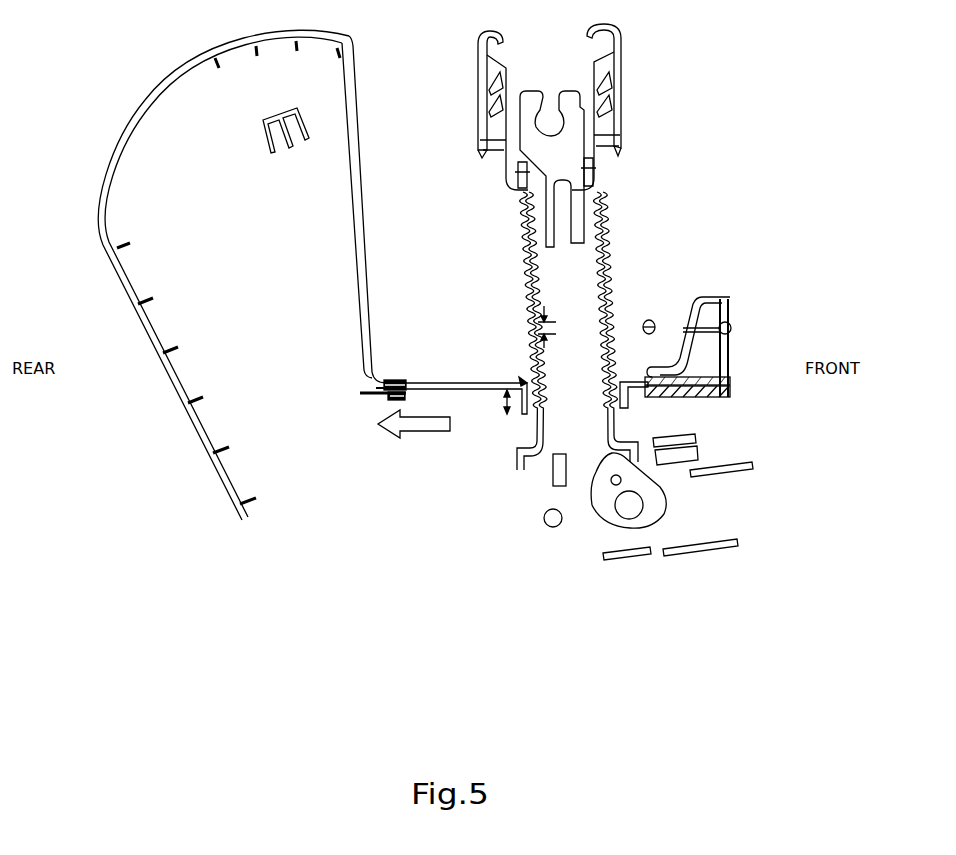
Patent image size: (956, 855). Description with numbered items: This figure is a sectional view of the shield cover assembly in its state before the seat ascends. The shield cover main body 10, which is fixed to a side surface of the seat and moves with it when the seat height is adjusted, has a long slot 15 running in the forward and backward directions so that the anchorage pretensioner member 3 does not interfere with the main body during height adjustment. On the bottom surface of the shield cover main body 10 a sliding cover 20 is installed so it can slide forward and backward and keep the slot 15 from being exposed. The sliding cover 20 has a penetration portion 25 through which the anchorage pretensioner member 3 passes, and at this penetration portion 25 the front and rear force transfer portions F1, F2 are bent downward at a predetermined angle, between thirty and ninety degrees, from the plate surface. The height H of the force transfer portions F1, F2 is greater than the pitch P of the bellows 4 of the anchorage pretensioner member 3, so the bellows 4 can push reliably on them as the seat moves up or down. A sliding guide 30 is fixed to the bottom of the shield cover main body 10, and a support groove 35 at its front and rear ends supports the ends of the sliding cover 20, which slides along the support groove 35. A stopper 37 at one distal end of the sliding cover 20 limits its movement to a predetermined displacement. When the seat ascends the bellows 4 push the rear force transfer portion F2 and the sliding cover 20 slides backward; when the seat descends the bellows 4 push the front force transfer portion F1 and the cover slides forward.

The shield cover main body 10 is at (147, 270).
The slot 15 is at (400, 380).
The sliding cover 20 is at (455, 391).
The penetration portion 25 is at (523, 379).
The sliding guide 30 is at (386, 396).
The support groove 35 is at (384, 393).
The stopper 37 is at (384, 385).
The anchorage pretensioner member 3 is at (603, 163).
The bellows 4 is at (603, 284).
The front force transfer portion F1 is at (630, 398).
The rear force transfer portion F2 is at (521, 400).
The height of the force transfer portions H is at (499, 402).
The pitch of the bellows P is at (549, 327).